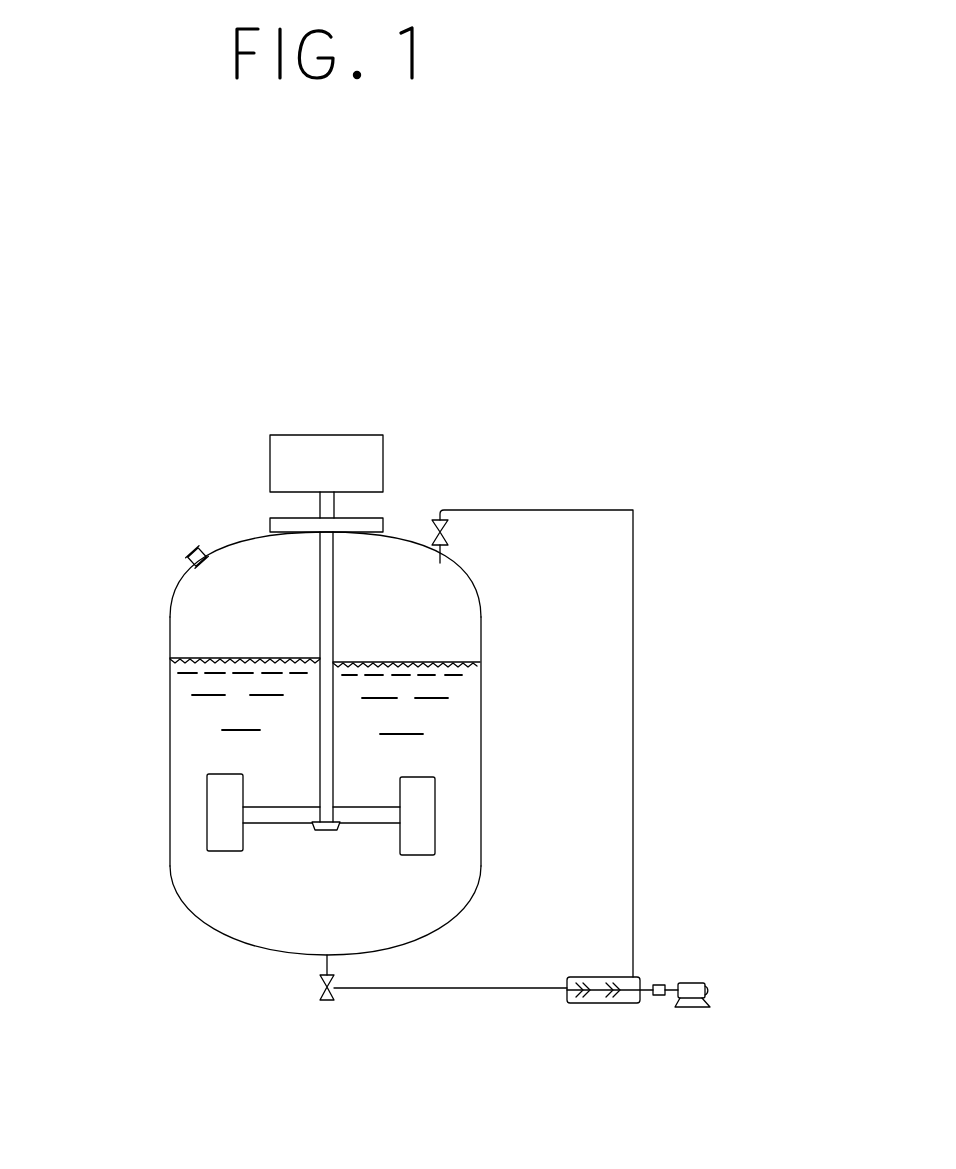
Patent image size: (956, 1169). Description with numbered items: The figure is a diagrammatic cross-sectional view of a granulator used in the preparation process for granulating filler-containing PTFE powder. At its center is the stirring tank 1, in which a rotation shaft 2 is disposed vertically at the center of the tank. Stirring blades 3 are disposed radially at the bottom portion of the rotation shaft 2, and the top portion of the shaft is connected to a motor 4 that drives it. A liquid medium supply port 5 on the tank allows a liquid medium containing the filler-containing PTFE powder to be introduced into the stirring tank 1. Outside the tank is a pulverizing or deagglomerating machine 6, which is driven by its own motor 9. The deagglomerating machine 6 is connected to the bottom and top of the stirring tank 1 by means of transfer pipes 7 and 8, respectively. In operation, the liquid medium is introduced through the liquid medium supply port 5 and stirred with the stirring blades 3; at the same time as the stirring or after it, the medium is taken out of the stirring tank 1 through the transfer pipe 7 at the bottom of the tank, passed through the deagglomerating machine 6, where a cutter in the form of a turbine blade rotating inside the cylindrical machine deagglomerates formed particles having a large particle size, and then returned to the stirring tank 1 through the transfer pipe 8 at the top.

The stirring tank 1 is at (170, 750).
The rotation shaft 2 is at (333, 625).
The stirring blades 3 is at (425, 805).
The motor 4 is at (384, 459).
The liquid medium supply port 5 is at (192, 556).
The deagglomerating machine 6 is at (640, 977).
The transfer pipe 7 is at (473, 988).
The transfer pipe 8 is at (633, 780).
The motor 9 is at (707, 980).